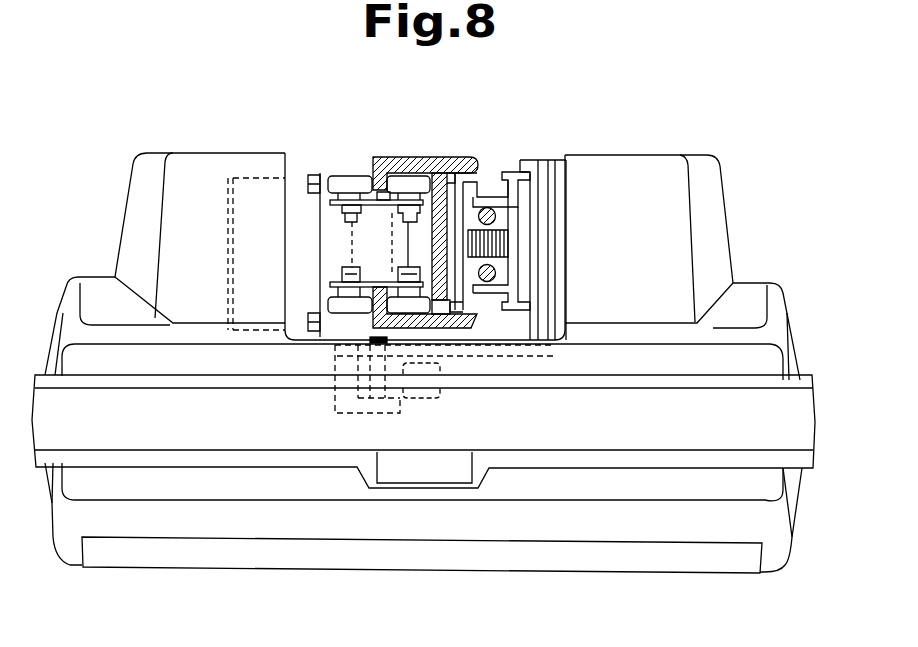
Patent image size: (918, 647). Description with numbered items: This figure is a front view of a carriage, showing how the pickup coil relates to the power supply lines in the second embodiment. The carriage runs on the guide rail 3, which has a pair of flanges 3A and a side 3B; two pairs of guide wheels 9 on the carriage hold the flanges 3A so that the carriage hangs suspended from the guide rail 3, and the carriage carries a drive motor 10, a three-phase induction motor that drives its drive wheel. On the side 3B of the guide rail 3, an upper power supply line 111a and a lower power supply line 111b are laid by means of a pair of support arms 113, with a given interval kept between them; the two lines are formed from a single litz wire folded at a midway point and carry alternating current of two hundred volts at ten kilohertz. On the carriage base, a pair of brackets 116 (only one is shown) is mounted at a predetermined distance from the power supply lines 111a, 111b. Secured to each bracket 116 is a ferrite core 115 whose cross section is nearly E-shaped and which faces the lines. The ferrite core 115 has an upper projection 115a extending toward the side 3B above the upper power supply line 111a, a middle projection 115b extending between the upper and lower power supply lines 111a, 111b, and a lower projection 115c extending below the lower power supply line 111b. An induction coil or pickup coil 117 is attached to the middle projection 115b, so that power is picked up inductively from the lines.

The guide rail 3 is at (412, 157).
The flanges 3A is at (368, 158).
The side 3B is at (457, 336).
The guide wheels 9 is at (348, 177).
The drive motor 10 is at (297, 177).
The upper power supply line 111a is at (496, 219).
The lower power supply line 111b is at (496, 274).
The support arms 113 is at (478, 197).
The ferrite core 115 is at (540, 186).
The upper projection 115a is at (522, 172).
The middle projection 115b is at (465, 185).
The lower projection 115c is at (508, 290).
The brackets 116 is at (522, 352).
The pickup coil 117 is at (453, 252).